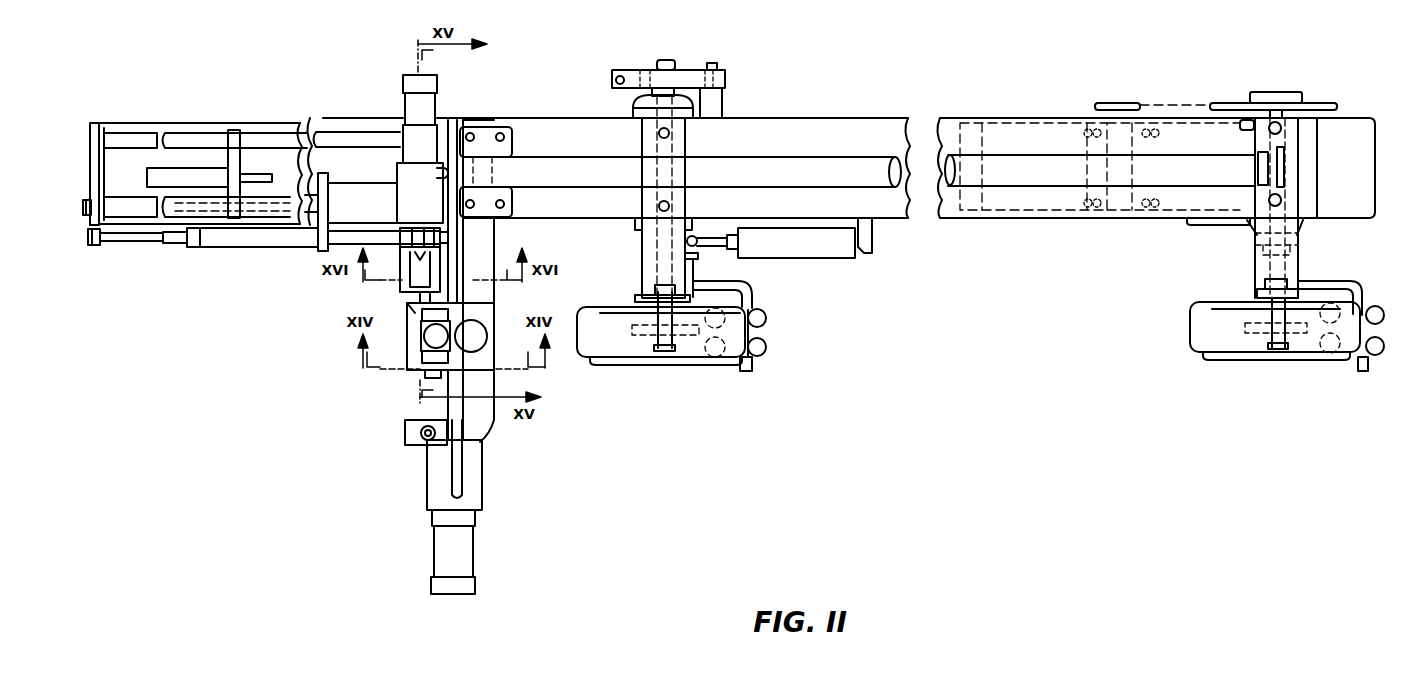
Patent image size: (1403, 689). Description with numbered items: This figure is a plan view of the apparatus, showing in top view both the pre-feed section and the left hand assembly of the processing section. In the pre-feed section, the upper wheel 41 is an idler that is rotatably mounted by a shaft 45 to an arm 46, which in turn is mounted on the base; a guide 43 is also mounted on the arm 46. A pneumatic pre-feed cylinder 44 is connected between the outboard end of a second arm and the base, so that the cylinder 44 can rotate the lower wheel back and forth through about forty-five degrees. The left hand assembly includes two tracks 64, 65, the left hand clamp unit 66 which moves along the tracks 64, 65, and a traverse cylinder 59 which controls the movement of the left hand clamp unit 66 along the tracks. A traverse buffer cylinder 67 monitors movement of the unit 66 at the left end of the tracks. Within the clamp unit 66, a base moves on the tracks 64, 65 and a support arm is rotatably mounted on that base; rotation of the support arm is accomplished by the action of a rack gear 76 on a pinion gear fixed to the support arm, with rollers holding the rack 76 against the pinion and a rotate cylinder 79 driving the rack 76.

The upper wheel 41 is at (698, 360).
The guide 43 is at (762, 350).
The pneumatic pre-feed cylinder 44 is at (805, 247).
The shaft 45 is at (657, 320).
The arm 46 is at (649, 243).
The traverse cylinder 59 is at (575, 172).
The track 64 is at (262, 205).
The track 65 is at (258, 138).
The left hand clamp unit 66 is at (408, 192).
The traverse buffer cylinder 67 is at (206, 178).
The rack gear 76 is at (356, 237).
The rotate cylinder 79 is at (217, 238).